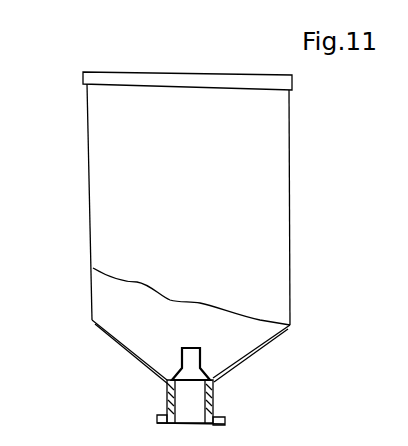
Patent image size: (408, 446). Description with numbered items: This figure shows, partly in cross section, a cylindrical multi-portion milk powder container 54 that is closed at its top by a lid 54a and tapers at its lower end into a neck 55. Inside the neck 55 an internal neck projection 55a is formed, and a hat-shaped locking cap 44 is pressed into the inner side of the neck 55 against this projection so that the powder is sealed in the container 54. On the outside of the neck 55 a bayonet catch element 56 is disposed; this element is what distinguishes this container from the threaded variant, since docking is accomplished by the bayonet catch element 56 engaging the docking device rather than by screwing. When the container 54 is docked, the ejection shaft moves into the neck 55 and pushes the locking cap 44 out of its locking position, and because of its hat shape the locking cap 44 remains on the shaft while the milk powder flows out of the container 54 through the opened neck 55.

The multi-portion milk powder container 54 is at (250, 190).
The multi-portion milk powder container lid 54a is at (134, 80).
The locking cap 44 is at (230, 350).
The internal neck projection 55a is at (167, 378).
The multi-portion milk powder container neck 55 is at (170, 398).
The bayonet catch element 56 is at (163, 418).